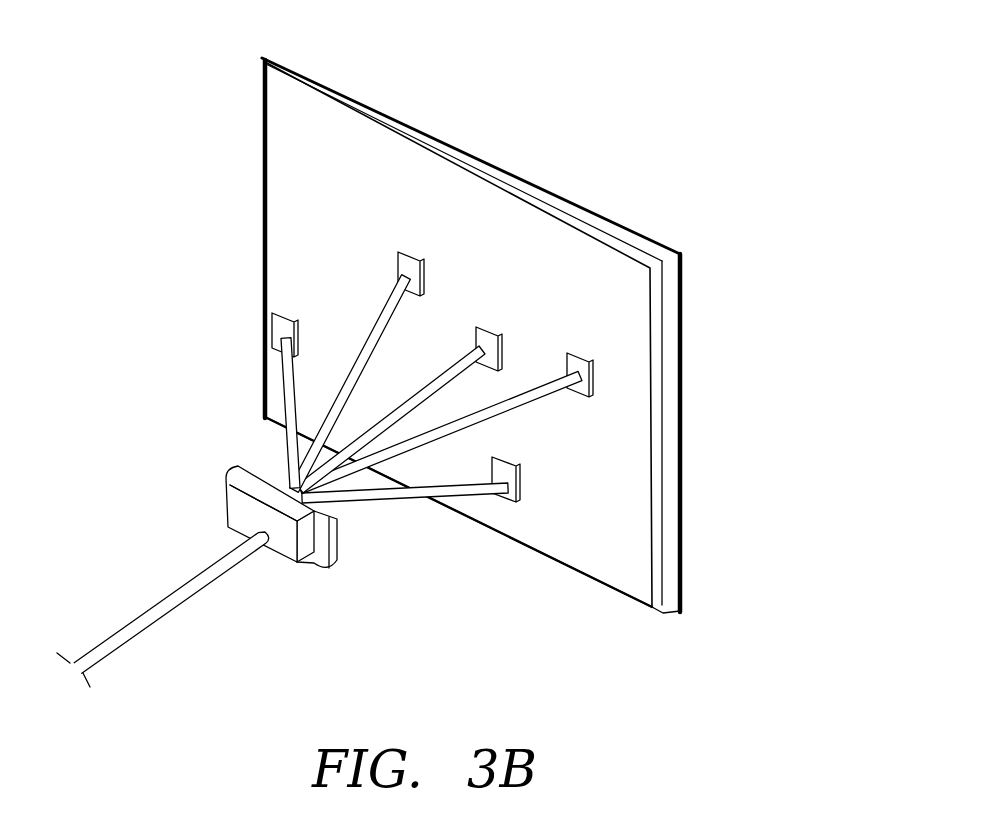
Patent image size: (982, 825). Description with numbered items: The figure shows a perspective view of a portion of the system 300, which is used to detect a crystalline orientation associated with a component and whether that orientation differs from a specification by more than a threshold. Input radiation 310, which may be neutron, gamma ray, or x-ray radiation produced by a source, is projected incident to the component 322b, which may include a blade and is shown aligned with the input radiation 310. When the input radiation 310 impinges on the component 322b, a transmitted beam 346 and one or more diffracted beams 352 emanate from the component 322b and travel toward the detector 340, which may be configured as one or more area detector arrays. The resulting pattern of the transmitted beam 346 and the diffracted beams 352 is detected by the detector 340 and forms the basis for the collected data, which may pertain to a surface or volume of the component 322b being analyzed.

The system 300 is at (443, 361).
The detector 340 is at (358, 258).
The diffracted beams 352 is at (287, 440).
The transmitted beam 346 is at (417, 393).
The component 322b is at (338, 560).
The input radiation 310 is at (167, 598).